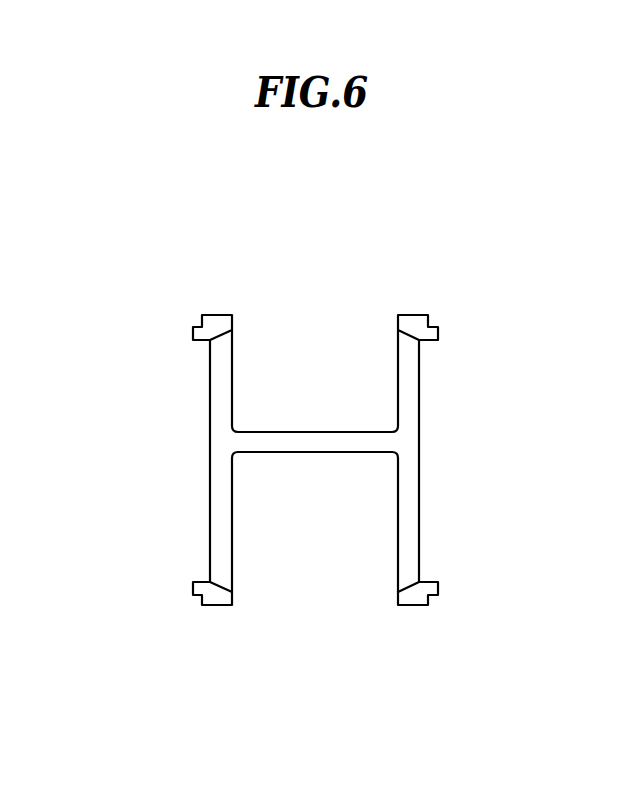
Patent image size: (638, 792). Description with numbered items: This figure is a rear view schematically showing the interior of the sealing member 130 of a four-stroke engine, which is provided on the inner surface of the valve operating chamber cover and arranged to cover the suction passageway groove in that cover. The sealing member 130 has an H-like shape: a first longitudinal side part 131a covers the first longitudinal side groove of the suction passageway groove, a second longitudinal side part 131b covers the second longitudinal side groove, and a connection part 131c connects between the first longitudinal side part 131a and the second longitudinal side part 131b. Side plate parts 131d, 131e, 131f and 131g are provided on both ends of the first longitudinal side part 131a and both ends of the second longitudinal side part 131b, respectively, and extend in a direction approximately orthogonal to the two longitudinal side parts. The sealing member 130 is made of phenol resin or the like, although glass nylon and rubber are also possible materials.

The sealing member 130 is at (302, 319).
The first longitudinal side part 131a is at (222, 402).
The second longitudinal side part 131b is at (408, 402).
The connection part 131c is at (306, 438).
The side plate part 131d is at (223, 320).
The side plate part 131g is at (412, 320).
The side plate part 131e is at (210, 608).
The side plate part 131f is at (410, 608).